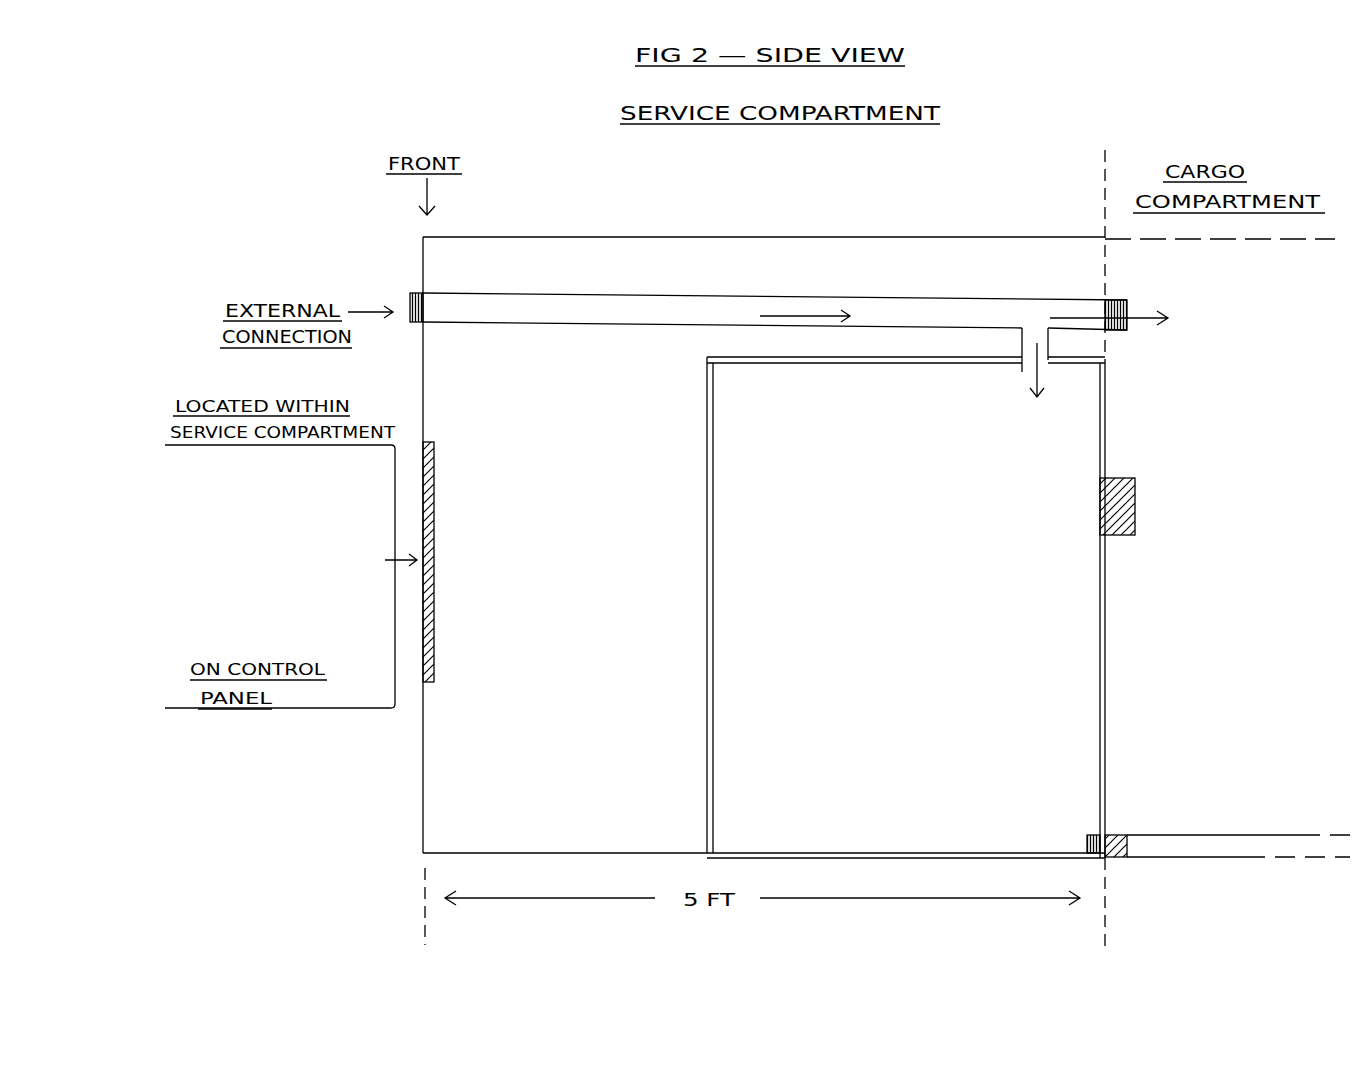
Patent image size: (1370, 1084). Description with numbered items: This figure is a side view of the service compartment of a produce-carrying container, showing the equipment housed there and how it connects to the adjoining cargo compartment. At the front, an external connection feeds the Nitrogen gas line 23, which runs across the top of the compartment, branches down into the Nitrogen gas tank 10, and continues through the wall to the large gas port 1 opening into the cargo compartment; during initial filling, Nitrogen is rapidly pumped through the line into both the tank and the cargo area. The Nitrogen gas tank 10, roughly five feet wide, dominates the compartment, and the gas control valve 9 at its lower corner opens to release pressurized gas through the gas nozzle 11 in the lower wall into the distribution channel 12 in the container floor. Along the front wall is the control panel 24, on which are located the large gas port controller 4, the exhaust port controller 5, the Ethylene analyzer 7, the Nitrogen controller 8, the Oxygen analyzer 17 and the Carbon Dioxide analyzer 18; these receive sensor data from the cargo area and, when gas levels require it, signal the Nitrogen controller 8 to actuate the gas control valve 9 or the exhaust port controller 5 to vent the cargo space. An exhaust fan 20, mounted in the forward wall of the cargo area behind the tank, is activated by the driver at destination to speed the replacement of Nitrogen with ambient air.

The large gas port 1 is at (1292, 323).
The large gas port controller 4 is at (193, 487).
The exhaust port controller 5 is at (193, 527).
The Ethylene analyzer 7 is at (193, 562).
The Nitrogen controller 8 is at (193, 597).
The gas control valve 9 is at (1017, 836).
The Nitrogen gas tank 10 is at (1028, 570).
The gas nozzle 11 is at (1200, 832).
The distribution channel 12 is at (1312, 890).
The Oxygen analyzer 17 is at (280, 490).
The Carbon Dioxide analyzer 18 is at (280, 528).
The exhaust fan 20 is at (1300, 517).
The Nitrogen gas line 23 is at (696, 437).
The control panel 24 is at (571, 503).